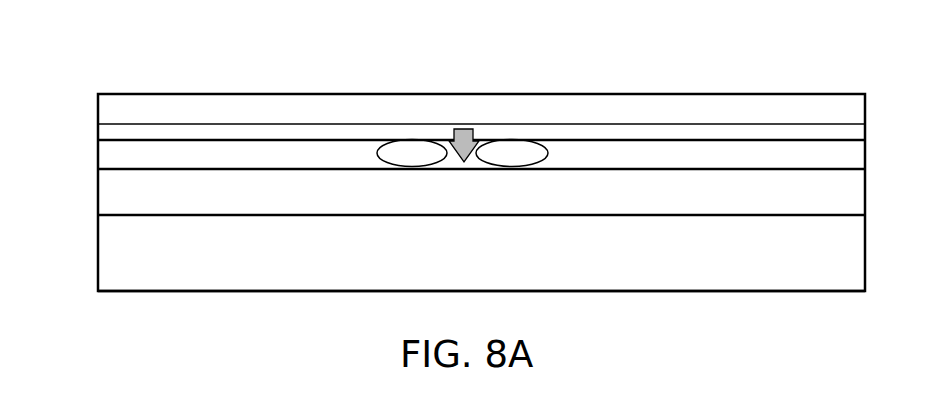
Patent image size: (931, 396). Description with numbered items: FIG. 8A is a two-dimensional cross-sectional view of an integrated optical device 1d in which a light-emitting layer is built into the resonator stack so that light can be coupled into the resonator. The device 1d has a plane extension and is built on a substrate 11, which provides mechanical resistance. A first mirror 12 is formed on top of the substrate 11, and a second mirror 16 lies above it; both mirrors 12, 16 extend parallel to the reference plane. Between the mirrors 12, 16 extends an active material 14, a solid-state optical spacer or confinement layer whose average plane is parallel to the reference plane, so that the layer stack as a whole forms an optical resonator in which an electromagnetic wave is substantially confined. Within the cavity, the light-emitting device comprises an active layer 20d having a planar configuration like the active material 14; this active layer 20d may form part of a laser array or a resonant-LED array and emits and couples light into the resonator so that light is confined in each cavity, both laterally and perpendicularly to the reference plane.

The optical device 1d is at (811, 308).
The substrate 11 is at (115, 253).
The mirror 12 is at (117, 188).
The active material 14 is at (105, 151).
The mirror 16 is at (112, 107).
The active layer 20d is at (252, 132).